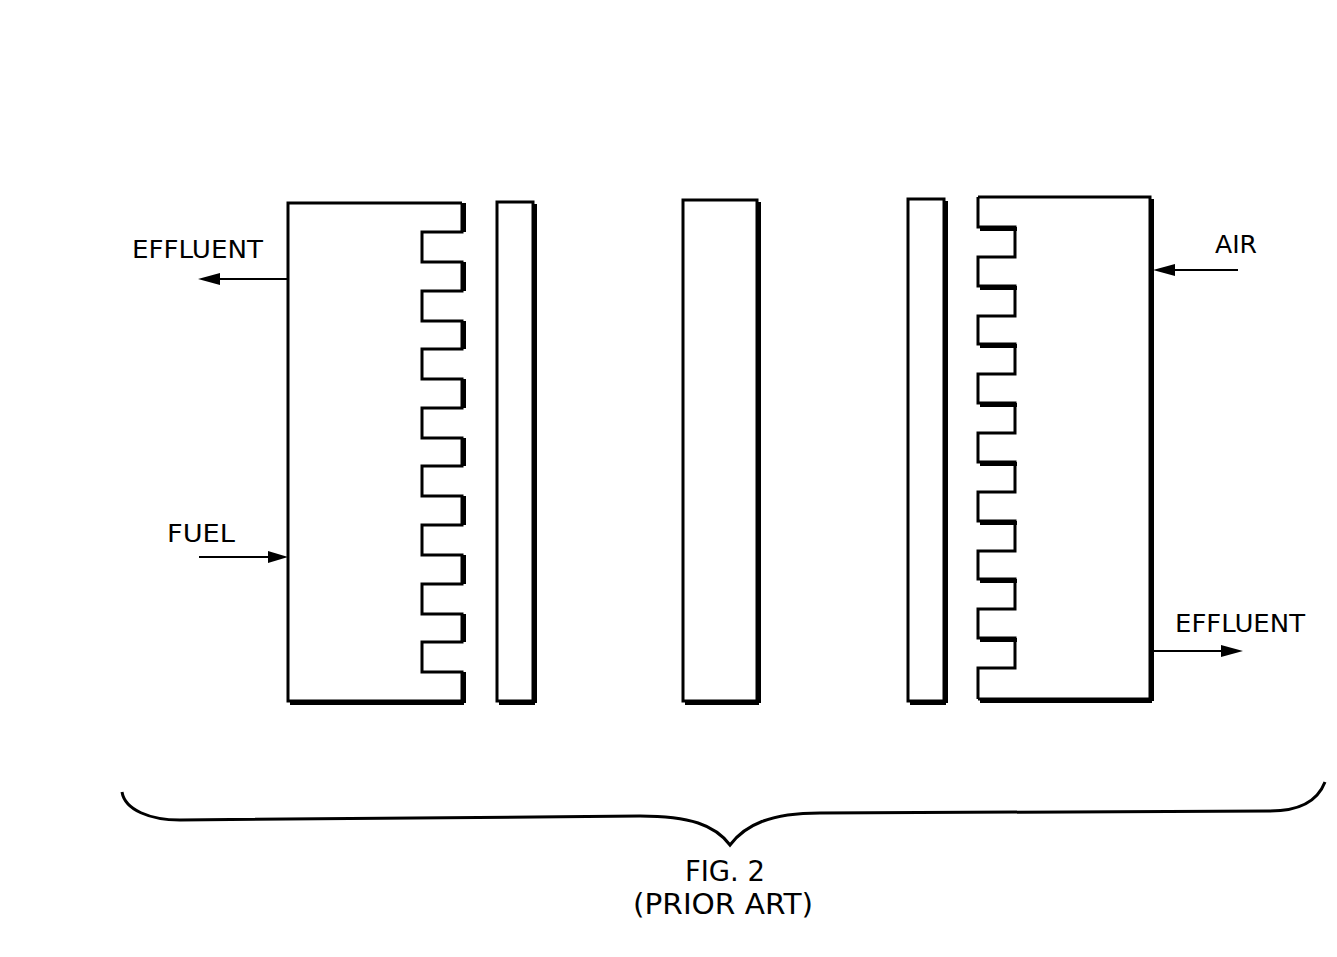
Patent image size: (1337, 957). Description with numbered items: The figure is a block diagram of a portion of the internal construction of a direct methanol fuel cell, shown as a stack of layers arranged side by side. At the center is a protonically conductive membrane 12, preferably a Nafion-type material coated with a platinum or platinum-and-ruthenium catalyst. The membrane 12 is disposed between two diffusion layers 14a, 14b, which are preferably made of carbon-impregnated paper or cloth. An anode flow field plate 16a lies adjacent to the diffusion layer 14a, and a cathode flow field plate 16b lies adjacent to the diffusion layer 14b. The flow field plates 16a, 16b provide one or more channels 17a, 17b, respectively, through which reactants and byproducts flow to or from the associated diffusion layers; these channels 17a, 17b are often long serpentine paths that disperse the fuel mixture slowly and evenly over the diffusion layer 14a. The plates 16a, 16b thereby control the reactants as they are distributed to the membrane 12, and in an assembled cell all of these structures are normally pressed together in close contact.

The protonically conductive membrane 12 is at (731, 703).
The diffusion layer 14a is at (513, 202).
The diffusion layer 14b is at (920, 199).
The anode flow field plate 16a is at (383, 436).
The cathode flow field plate 16b is at (1056, 435).
The channels 17a is at (428, 248).
The channels 17b is at (1013, 241).